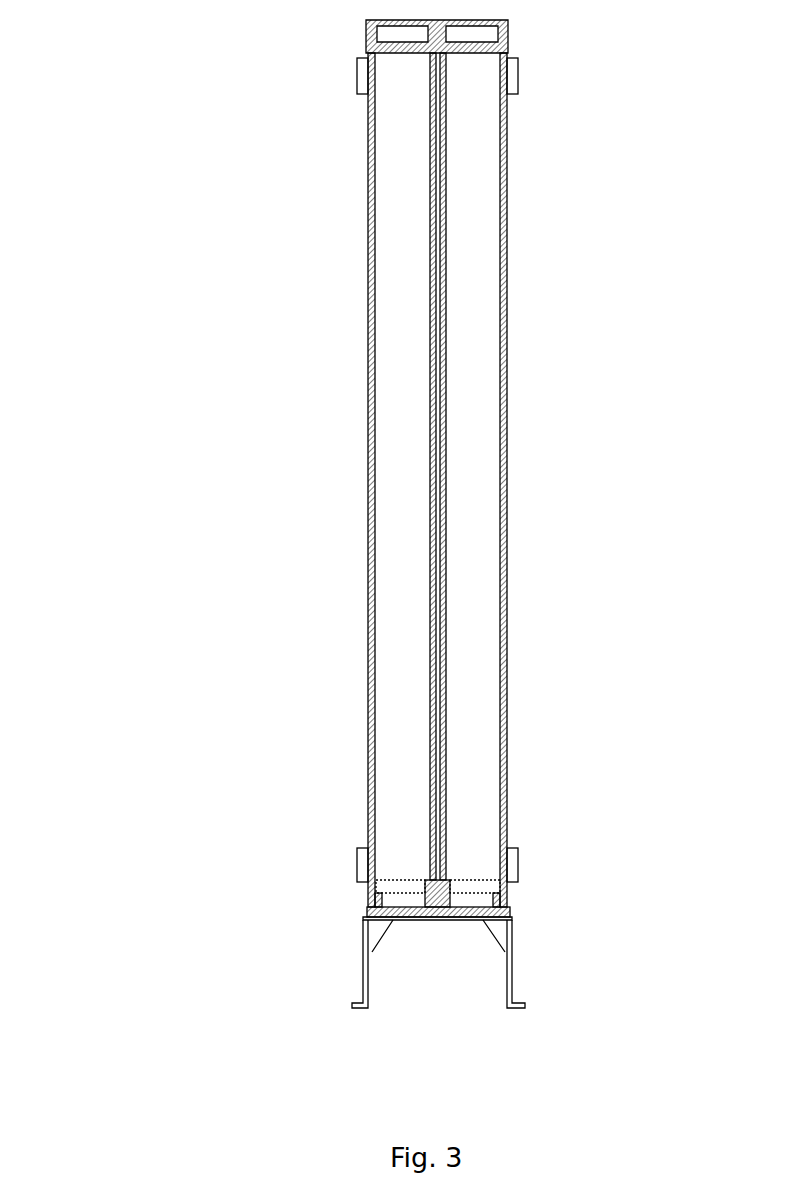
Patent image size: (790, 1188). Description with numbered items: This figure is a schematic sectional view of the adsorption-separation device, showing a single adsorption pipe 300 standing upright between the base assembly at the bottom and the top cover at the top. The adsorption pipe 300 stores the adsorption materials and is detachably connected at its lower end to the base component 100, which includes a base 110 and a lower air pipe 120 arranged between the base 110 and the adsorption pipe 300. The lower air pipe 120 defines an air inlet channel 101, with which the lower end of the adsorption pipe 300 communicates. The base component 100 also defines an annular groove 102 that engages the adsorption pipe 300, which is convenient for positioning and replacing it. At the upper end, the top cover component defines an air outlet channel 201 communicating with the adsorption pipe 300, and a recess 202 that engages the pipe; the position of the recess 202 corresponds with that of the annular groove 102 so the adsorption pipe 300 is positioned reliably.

The base component 100 is at (343, 909).
The air inlet channel 101 is at (510, 893).
The annular groove 102 is at (445, 884).
The base 110 is at (365, 934).
The lower air pipe 120 is at (368, 893).
The air outlet channel 201 is at (508, 30).
The recess 202 is at (375, 57).
The adsorption pipe 300 is at (492, 352).